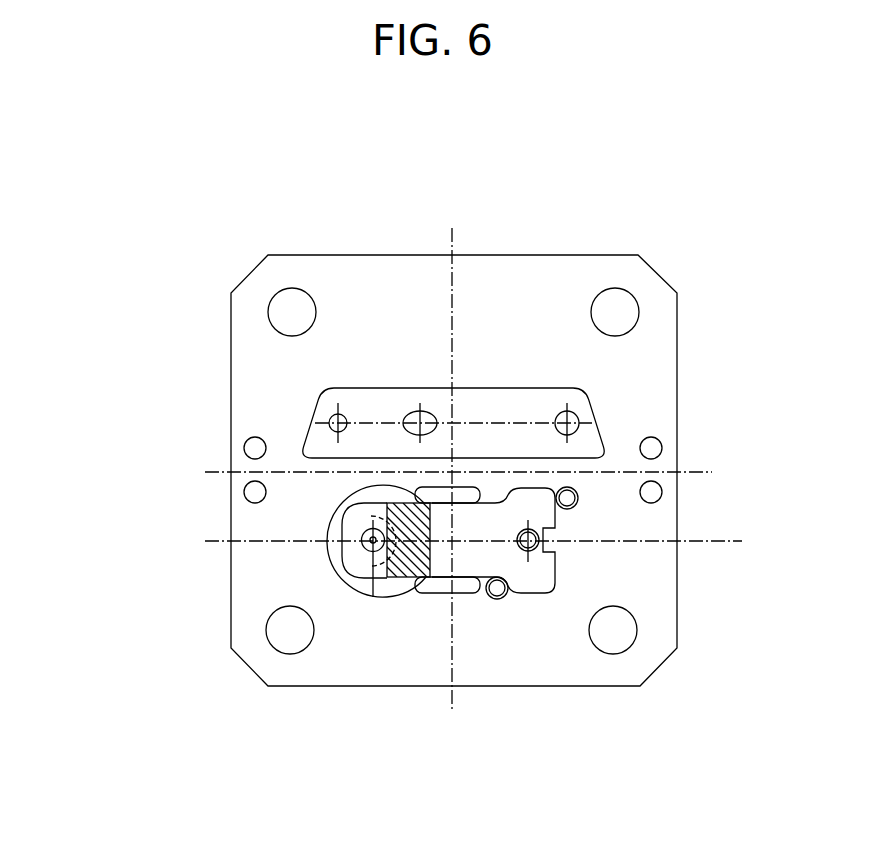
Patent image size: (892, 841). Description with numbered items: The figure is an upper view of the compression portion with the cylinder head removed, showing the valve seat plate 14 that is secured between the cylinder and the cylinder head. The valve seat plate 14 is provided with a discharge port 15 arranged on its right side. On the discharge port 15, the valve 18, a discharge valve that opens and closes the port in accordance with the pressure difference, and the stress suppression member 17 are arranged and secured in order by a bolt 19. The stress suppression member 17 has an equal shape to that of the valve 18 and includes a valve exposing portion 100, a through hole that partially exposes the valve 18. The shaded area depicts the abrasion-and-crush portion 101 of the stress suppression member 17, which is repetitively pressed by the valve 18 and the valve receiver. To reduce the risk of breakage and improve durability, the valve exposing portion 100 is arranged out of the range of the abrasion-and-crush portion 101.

The valve seat plate 14 is at (590, 258).
The discharge port 15 is at (373, 557).
The stress suppression member 17 is at (496, 636).
The valve 18 is at (443, 582).
The bolt 19 is at (531, 549).
The valve exposing portion 100 is at (363, 542).
The abrasion-and-crush portion 101 is at (374, 500).